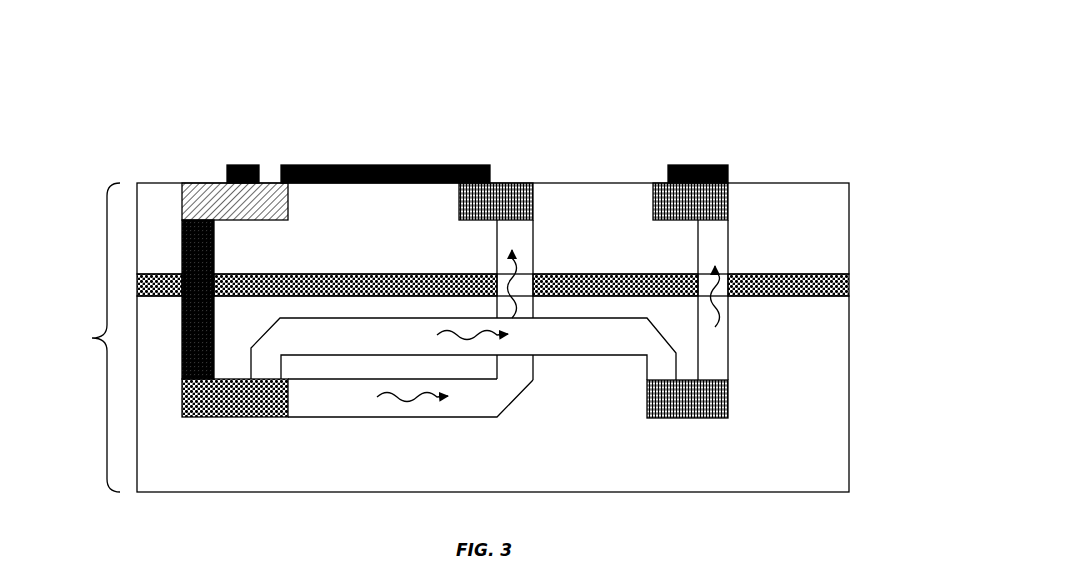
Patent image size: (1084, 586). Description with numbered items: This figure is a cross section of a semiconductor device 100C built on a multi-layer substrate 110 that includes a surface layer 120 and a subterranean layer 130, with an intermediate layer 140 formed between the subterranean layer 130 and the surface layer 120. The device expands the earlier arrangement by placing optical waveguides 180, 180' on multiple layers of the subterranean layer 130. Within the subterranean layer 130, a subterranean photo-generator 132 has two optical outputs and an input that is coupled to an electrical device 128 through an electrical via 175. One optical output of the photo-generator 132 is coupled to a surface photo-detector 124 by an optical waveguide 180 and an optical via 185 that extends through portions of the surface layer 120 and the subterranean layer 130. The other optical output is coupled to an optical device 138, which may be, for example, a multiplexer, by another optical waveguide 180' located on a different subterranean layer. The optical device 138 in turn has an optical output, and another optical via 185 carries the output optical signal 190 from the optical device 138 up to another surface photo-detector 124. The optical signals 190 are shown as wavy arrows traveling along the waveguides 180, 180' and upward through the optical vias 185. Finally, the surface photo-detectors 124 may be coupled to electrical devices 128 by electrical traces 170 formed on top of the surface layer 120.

The semiconductor device 100C is at (812, 68).
The multi-layer substrate 110 is at (108, 190).
The surface layer 120 is at (849, 205).
The surface photo-detector 124 is at (660, 206).
The electrical device 128 is at (200, 195).
The subterranean layer 130 is at (849, 457).
The subterranean photo-generator 132 is at (250, 400).
The optical device 138 is at (690, 403).
The intermediate layer 140 is at (849, 282).
The electrical traces 170 is at (690, 165).
The electrical via 175 is at (215, 238).
The optical waveguide 180 is at (410, 398).
The optical waveguide 180' is at (463, 349).
The optical via 185 is at (706, 236).
The optical signal 190 is at (473, 337).